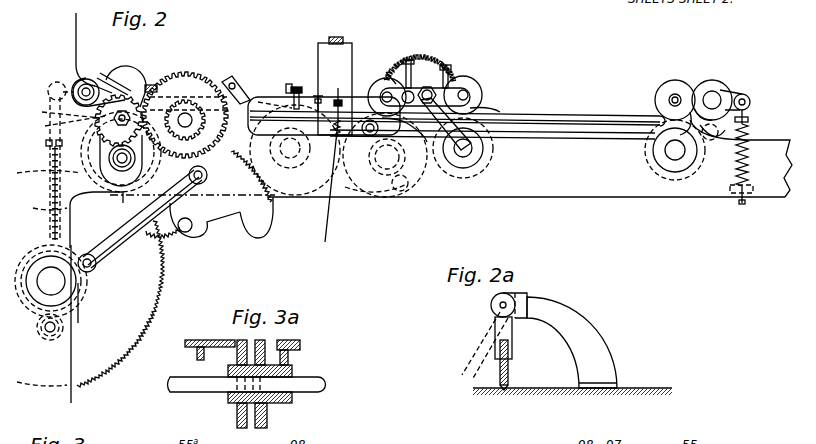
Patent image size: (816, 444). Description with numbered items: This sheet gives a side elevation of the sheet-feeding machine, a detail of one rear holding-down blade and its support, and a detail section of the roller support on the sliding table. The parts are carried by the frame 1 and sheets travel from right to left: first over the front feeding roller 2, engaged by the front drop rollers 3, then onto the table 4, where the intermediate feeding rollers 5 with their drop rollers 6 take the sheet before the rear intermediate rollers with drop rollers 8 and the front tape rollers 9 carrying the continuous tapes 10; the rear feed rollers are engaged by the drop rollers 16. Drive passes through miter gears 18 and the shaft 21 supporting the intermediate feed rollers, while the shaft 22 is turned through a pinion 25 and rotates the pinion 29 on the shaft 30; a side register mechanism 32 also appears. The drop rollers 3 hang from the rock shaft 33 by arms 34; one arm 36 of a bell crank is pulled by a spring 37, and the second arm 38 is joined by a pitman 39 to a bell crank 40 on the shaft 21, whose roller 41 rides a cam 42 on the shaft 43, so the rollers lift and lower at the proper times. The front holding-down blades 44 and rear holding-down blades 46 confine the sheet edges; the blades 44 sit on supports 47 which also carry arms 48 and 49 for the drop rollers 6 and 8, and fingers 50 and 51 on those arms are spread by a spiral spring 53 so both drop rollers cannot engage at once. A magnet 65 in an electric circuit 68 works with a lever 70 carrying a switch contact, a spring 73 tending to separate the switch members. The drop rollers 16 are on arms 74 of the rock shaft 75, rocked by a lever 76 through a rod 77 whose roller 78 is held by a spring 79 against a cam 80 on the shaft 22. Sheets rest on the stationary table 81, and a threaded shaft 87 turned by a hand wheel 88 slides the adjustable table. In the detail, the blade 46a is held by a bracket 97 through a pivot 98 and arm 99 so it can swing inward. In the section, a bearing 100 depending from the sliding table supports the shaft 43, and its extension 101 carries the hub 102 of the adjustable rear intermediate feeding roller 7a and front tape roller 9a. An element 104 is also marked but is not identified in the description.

In FIG. 2, the frame 1 is at (550, 178).
In FIG. 2, the front feeding roller 2 is at (644, 165).
In FIG. 2, the front drop rollers 3 is at (668, 92).
In FIG. 2, the table 4 is at (580, 121).
In FIG. 2, the intermediate feeding rollers 5 is at (490, 165).
In FIG. 2, the drop rollers 6 is at (472, 98).
In FIG. 2, the drop rollers 8 is at (385, 91).
In FIG. 2, the front tape rollers 9 is at (428, 200).
In FIG. 2, the tapes 10 is at (296, 115).
In FIG. 2, the drop rollers 16 is at (150, 72).
In FIG. 2, the miter gears 18 is at (345, 160).
In FIG. 2, the shaft 21 is at (472, 150).
In FIG. 2, the shaft 22 is at (52, 284).
In FIG. 2, the pinion 25 is at (138, 304).
In FIG. 2, the pinion 29 is at (153, 214).
In FIG. 2, the shaft 30 is at (121, 152).
In FIG. 2, the side register mechanism 32 is at (190, 78).
In FIG. 3A, the side register mechanism 32 is at (300, 350).
In FIG. 2, the rock shaft 33 is at (722, 92).
In FIG. 2, the arms 34 is at (690, 95).
In FIG. 2, the arm of bell crank 36 is at (750, 99).
In FIG. 2, the spring 37 is at (751, 140).
In FIG. 2, the second arm of bell crank 38 is at (714, 140).
In FIG. 2, the pitman 39 is at (600, 136).
In FIG. 2, the bell crank 40 is at (430, 165).
In FIG. 2, the roller 41 is at (404, 192).
In FIG. 2, the cam 42 is at (387, 200).
In FIG. 2, the shaft 43 is at (368, 195).
In FIG. 3A, the shaft 43 is at (320, 385).
In FIG. 2, the front holding-down blades 44 is at (488, 110).
In FIG. 2, the rear holding-down blades 46 is at (275, 105).
In FIG. 2, the supports 47 is at (450, 70).
In FIG. 2, the arms 48 is at (468, 90).
In FIG. 2, the arms 49 is at (394, 80).
In FIG. 2, the finger 50 is at (448, 68).
In FIG. 2, the finger 51 is at (410, 60).
In FIG. 2, the spiral spring 53 is at (428, 58).
In FIG. 2, the magnet 65 is at (333, 132).
In FIG. 2, the electric circuit 68 is at (335, 86).
In FIG. 2, the lever 70 is at (338, 100).
In FIG. 2, the spring 73 is at (328, 188).
In FIG. 2, the arms 74 is at (103, 82).
In FIG. 2, the rock shaft 75 is at (87, 86).
In FIG. 2, the lever 76 is at (57, 82).
In FIG. 2, the rod 77 is at (63, 110).
In FIG. 2, the roller 78 is at (50, 340).
In FIG. 2, the spring 79 is at (47, 150).
In FIG. 2, the cam 80 is at (80, 297).
In FIG. 2, the stationary table 81 is at (251, 96).
In FIG. 2, the shaft 87 is at (286, 152).
In FIG. 2, the hand wheel 88 is at (290, 88).
In FIG. 2, the brackets 97 is at (297, 86).
In FIG. 2A, the brackets 97 is at (574, 342).
In FIG. 2A, the pivot 98 is at (506, 304).
In FIG. 2, the arm 99 is at (318, 95).
In FIG. 2A, the arm 99 is at (510, 333).
In FIG. 3A, the bearing 100 is at (292, 369).
In FIG. 3A, the extension 101 is at (228, 397).
In FIG. 3A, the hub 102 is at (228, 370).
In FIG. 2, the link 104 is at (43, 135).
In FIG. 2A, the rear holding-down blade 46a is at (508, 368).
In FIG. 3A, the rear intermediate feeding roller 7a is at (240, 418).
In FIG. 3A, the front tape roller 9a is at (268, 418).